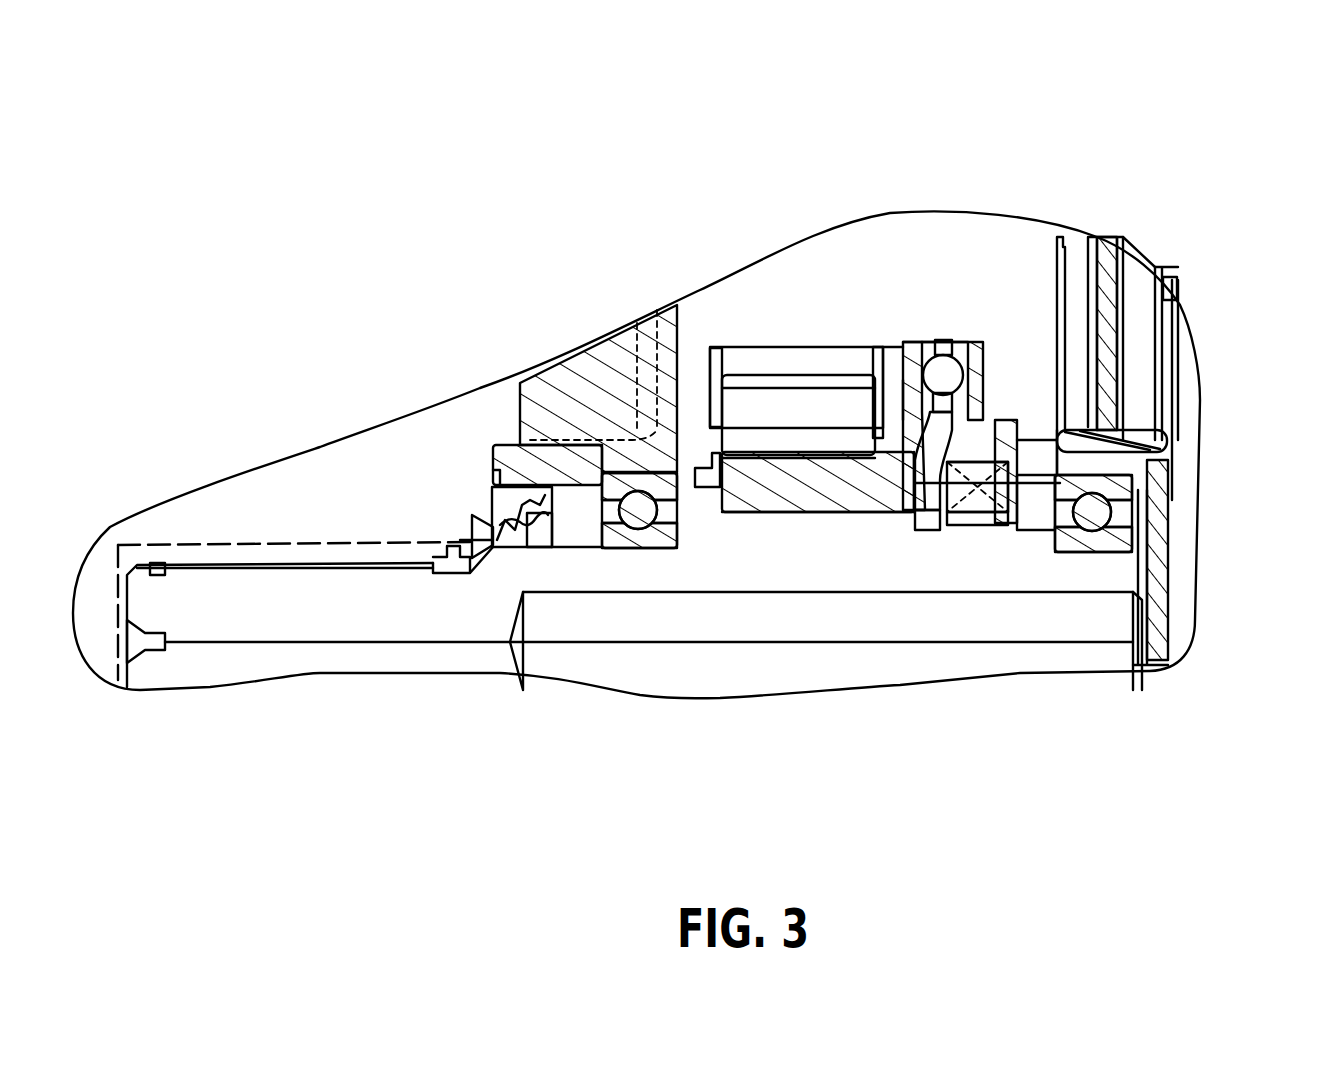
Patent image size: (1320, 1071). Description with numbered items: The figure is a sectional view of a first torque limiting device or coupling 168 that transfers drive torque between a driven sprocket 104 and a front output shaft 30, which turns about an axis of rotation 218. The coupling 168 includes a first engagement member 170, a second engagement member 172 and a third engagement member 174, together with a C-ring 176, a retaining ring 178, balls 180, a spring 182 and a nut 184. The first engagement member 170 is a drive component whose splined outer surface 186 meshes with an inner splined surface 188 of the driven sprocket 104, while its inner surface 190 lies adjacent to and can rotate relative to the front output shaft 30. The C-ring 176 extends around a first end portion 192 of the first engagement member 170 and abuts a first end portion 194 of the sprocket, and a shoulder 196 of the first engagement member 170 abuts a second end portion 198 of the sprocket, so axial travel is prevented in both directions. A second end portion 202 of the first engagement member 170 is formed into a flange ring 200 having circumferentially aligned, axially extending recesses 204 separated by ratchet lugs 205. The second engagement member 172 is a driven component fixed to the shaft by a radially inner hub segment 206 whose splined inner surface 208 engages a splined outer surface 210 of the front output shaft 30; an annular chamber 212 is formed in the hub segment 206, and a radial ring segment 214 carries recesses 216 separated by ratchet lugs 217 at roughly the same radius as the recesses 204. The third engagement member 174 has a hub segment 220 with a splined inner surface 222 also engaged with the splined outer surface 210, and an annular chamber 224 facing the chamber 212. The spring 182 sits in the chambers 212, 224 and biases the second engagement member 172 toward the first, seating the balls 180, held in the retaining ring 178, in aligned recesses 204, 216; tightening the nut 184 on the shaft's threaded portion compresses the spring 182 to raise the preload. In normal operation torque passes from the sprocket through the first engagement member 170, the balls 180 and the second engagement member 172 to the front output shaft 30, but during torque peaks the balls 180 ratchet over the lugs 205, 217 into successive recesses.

The front output shaft 30 is at (280, 642).
The driven sprocket 104 is at (663, 427).
The first torque limiting device 168 is at (978, 355).
The first engagement member 170 is at (917, 360).
The second engagement member 172 is at (996, 315).
The third engagement member 174 is at (1020, 455).
The C-ring 176 is at (700, 455).
The retaining ring 178 is at (943, 338).
The balls 180 is at (920, 360).
The spring 182 is at (1005, 415).
The nut 184 is at (1040, 487).
The splined outer surface 186 is at (835, 445).
The inner splined surface 188 is at (708, 410).
The inner surface 190 is at (772, 513).
The first end portion 192 is at (718, 475).
The first end portion 194 is at (707, 380).
The shoulder 196 is at (740, 415).
The second end portion 198 is at (886, 455).
The flange ring 200 is at (903, 350).
The second end portion 202 is at (890, 530).
The recesses 204 is at (903, 380).
The ratchet lugs 205 is at (930, 362).
The hub segment 206 is at (940, 530).
The splined inner surface 208 is at (950, 515).
The splined outer surface 210 is at (983, 530).
The annular chamber 212 is at (958, 525).
The radial ring segment 214 is at (978, 338).
The recesses 216 is at (970, 338).
The ratchet lugs 217 is at (980, 397).
The axis of rotation 218 is at (210, 640).
The hub segment 220 is at (1020, 480).
The splined inner surface 222 is at (1000, 520).
The annular chamber 224 is at (1065, 440).